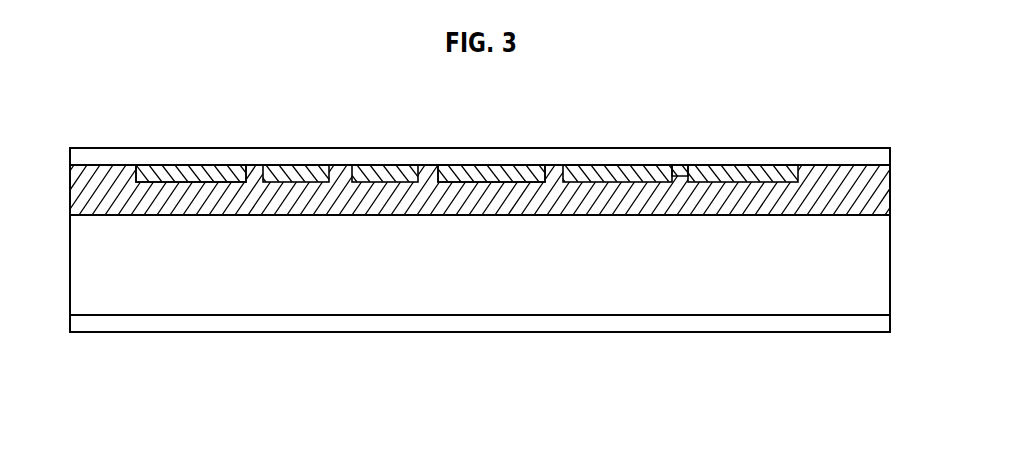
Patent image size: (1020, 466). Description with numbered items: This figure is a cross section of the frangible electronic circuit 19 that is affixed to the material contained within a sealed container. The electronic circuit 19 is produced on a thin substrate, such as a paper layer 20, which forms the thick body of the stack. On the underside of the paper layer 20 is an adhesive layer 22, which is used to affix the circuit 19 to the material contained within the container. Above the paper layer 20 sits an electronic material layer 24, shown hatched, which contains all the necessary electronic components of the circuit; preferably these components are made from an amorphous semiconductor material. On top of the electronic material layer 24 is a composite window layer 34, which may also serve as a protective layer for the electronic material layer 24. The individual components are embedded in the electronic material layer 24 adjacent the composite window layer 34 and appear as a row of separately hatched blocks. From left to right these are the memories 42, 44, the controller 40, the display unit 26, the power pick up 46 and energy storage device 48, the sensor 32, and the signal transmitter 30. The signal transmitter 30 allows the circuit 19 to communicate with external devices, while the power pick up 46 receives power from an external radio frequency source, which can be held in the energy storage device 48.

The electronic circuit 19 is at (290, 350).
The paper layer 20 is at (715, 292).
The adhesive layer 22 is at (548, 323).
The electronic material layer 24 is at (823, 173).
The display unit 26 is at (367, 168).
The signal transmitter 30 is at (737, 173).
The sensor 32 is at (622, 168).
The composite window layer 34 is at (220, 157).
The controller 40 is at (294, 168).
The memory 42 is at (185, 168).
The memory 44 is at (191, 173).
The power pick up 46 is at (496, 170).
The energy storage device 48 is at (491, 173).